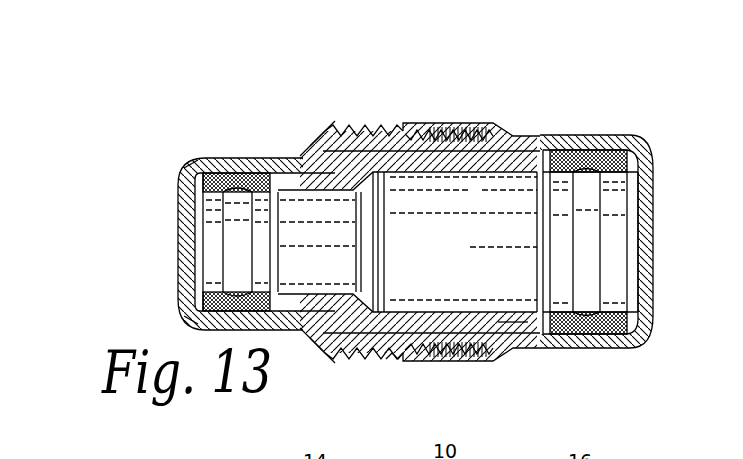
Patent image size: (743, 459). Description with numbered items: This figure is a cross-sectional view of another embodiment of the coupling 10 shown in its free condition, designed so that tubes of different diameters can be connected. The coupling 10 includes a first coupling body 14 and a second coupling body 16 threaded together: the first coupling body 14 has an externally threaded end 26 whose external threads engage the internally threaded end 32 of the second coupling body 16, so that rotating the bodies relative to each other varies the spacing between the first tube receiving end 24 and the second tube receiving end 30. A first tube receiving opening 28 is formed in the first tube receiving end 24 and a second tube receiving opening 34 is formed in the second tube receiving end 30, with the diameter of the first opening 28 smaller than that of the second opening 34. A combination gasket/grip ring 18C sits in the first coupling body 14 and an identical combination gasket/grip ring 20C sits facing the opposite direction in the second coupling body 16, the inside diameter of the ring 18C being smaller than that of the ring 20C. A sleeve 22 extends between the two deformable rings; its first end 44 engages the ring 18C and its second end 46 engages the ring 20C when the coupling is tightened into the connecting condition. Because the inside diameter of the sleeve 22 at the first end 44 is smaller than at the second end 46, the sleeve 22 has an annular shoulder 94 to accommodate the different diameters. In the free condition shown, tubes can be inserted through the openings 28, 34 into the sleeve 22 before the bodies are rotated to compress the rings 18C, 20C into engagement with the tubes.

The coupling 10 is at (446, 92).
The first coupling body 14 is at (320, 131).
The second coupling body 16 is at (522, 132).
The combination gasket/grip ring 18C is at (218, 158).
The combination gasket/grip ring 20C is at (587, 157).
The sleeve 22 is at (387, 343).
The first tube receiving end 24 is at (190, 165).
The externally threaded end 26 is at (384, 128).
The first tube receiving opening 28 is at (180, 237).
The second tube receiving end 30 is at (640, 144).
The internally threaded end 32 is at (470, 123).
The second tube receiving opening 34 is at (645, 255).
The first end 44 is at (300, 157).
The second end 46 is at (513, 325).
The annular shoulder 94 is at (373, 300).